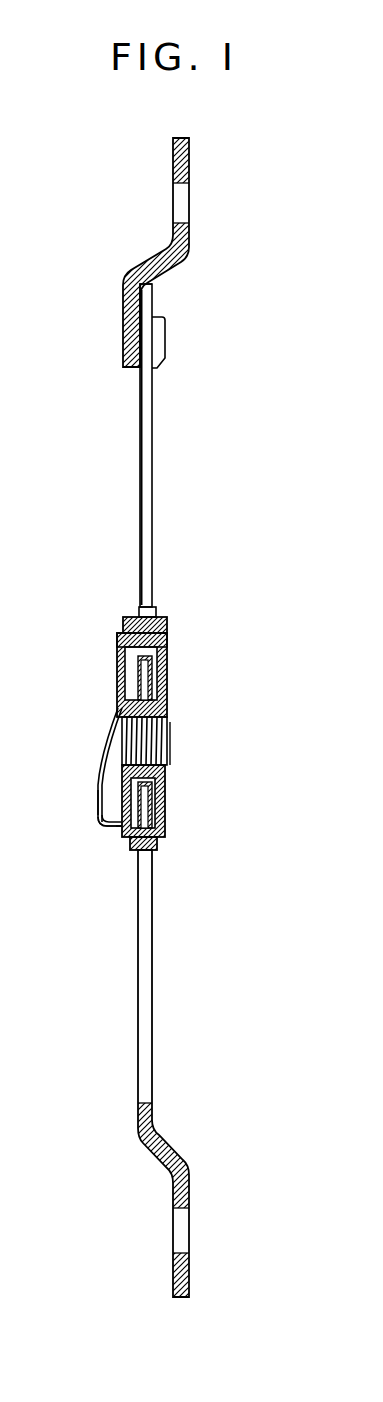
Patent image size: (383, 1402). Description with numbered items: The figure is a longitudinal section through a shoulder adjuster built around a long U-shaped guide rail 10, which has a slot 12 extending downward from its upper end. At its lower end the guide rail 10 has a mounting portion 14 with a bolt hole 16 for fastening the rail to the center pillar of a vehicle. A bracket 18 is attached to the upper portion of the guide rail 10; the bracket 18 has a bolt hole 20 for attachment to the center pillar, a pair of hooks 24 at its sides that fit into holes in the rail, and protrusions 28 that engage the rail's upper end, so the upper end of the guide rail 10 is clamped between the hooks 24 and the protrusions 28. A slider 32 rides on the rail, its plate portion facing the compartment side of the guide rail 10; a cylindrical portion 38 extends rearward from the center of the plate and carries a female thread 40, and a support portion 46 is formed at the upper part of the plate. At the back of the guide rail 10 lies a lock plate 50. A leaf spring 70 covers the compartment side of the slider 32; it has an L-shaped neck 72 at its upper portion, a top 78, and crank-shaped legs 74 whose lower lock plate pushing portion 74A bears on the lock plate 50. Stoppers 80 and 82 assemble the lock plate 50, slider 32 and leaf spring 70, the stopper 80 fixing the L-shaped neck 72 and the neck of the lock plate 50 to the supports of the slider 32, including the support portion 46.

The guide rail 10 is at (145, 432).
The slot 12 is at (145, 483).
The mounting portion 14 is at (175, 1190).
The bolt hole 16 is at (188, 1250).
The bracket 18 is at (190, 164).
The bolt hole 20 is at (189, 218).
The hooks 24 is at (165, 322).
The protrusions 28 is at (152, 289).
The slider 32 is at (103, 820).
The cylindrical portion 38 is at (165, 800).
The female thread 40 is at (150, 762).
The support portion 46 is at (147, 602).
The lock plate 50 is at (167, 685).
The leaf spring 70 is at (99, 773).
The L-shaped neck 72 is at (118, 643).
The legs 74 is at (100, 822).
The lock plate pushing portion 74A is at (130, 846).
The top of the leaf spring 78 is at (97, 810).
The stopper 80 is at (123, 620).
The stopper 82 is at (157, 843).